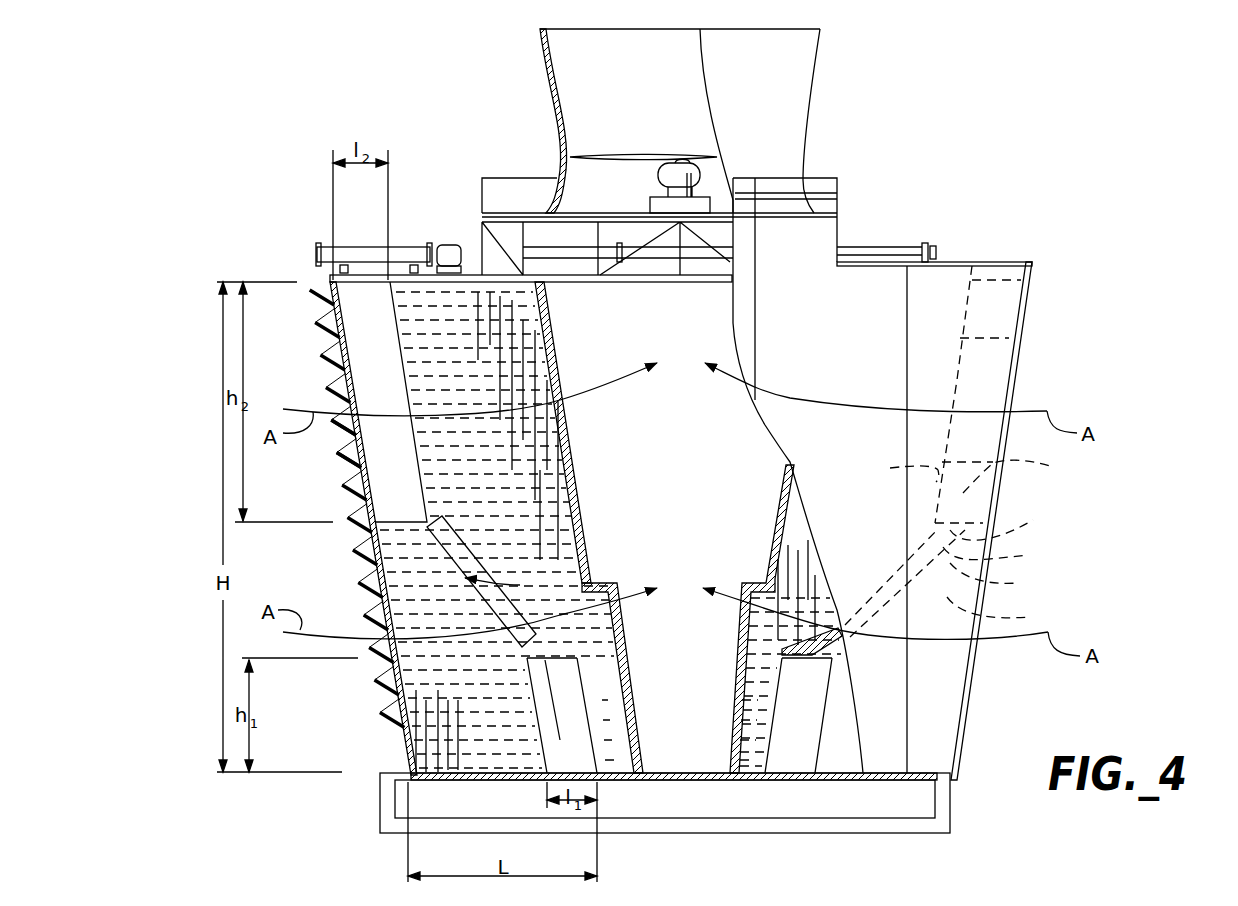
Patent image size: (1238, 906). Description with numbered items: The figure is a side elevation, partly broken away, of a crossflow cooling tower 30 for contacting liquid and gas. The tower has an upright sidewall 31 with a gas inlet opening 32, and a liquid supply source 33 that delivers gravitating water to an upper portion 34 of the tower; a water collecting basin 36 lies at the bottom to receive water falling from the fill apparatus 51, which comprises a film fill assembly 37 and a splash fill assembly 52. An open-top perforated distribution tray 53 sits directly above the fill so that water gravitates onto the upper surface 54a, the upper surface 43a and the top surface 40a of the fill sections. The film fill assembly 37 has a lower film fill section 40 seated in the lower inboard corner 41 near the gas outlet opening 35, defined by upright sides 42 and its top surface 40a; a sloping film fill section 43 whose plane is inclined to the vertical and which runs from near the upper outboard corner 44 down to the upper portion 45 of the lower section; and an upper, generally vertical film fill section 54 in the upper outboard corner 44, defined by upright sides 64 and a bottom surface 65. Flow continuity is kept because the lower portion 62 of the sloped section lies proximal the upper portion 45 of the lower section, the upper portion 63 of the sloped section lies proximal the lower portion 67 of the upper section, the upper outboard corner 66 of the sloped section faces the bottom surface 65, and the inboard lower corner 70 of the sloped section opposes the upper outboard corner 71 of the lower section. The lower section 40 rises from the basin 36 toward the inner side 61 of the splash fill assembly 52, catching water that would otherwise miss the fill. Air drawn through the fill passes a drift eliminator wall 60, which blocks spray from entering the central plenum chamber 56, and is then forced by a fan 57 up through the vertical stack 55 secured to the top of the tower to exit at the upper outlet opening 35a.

The cooling tower 30 is at (962, 152).
The upright sidewall 31 is at (960, 690).
The gas inlet opening 32 is at (313, 352).
The liquid supply source 33 is at (333, 262).
The upper portion of the tower 34 is at (330, 288).
The gas outlet opening 35 is at (572, 556).
The upper outlet opening 35a is at (545, 62).
The water collecting basin 36 is at (815, 835).
The film fill assembly 37 is at (322, 368).
The lower film fill section 40 is at (768, 690).
The top surface of lower film fill section 40a is at (557, 657).
The lower inboard corner 41 is at (600, 790).
The upright sides of lower film fill section 42 is at (533, 700).
The sloping film fill section 43 is at (380, 612).
The upper surface of sloping film fill section 43a is at (520, 585).
The upper outboard corner of the tower 44 is at (350, 470).
The upper portion of lower film fill section 45 is at (832, 660).
The fill apparatus 51 is at (405, 278).
The splash fill assembly 52 is at (510, 296).
The distribution tray 53 is at (400, 275).
The upper film fill section 54 is at (342, 303).
The upper surface of upper film fill section 54a is at (345, 248).
The vertical stack 55 is at (822, 78).
The central plenum chamber 56 is at (712, 436).
The fan 57 is at (575, 157).
The drift eliminator wall 60 is at (548, 322).
The inner side of splash fill assembly 61 is at (548, 420).
The lower portion of sloped film fill section 62 is at (385, 672).
The upper portion of sloped film fill section 63 is at (370, 585).
The upright sides of upper film fill section 64 is at (345, 396).
The bottom surface of upper film fill section 65 is at (370, 528).
The upper outboard corner of sloped film fill section 66 is at (362, 562).
The lower portion of upper film fill section 67 is at (385, 493).
The inboard lower corner of sloped film fill section 70 is at (835, 645).
The upper outboard corner of lower film fill section 71 is at (397, 760).